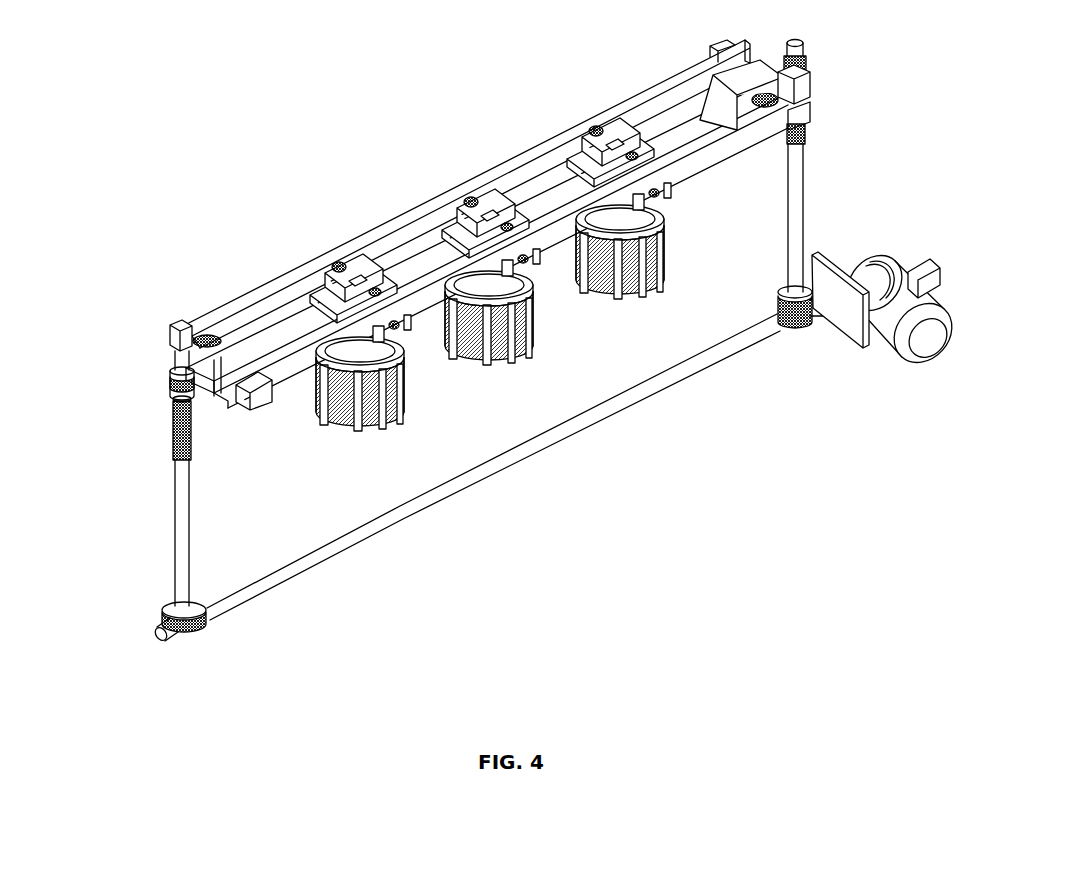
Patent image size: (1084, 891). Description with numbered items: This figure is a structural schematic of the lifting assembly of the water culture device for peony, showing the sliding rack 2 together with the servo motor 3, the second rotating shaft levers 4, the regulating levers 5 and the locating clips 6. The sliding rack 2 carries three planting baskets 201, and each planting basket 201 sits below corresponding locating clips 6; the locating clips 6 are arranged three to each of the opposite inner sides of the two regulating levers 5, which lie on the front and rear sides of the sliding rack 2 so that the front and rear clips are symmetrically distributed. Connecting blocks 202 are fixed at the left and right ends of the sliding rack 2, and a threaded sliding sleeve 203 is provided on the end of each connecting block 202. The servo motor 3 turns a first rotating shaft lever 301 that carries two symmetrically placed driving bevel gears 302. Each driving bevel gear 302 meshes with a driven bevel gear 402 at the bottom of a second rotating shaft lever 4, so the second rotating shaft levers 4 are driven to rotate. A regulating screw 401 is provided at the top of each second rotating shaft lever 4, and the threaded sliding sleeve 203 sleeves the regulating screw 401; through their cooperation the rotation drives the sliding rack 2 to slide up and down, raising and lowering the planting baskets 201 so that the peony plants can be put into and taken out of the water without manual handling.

The sliding rack 2 is at (289, 348).
The servo motor 3 is at (897, 283).
The second rotating shaft lever 4 is at (174, 530).
The regulating lever 5 is at (384, 234).
The locating clip 6 is at (484, 212).
The planting basket 201 is at (390, 418).
The connecting block 202 is at (188, 323).
The threaded sliding sleeve 203 is at (173, 380).
The first rotating shaft lever 301 is at (608, 404).
The driving bevel gear 302 is at (790, 337).
The regulating screw 401 is at (174, 433).
The driven bevel gear 402 is at (190, 623).